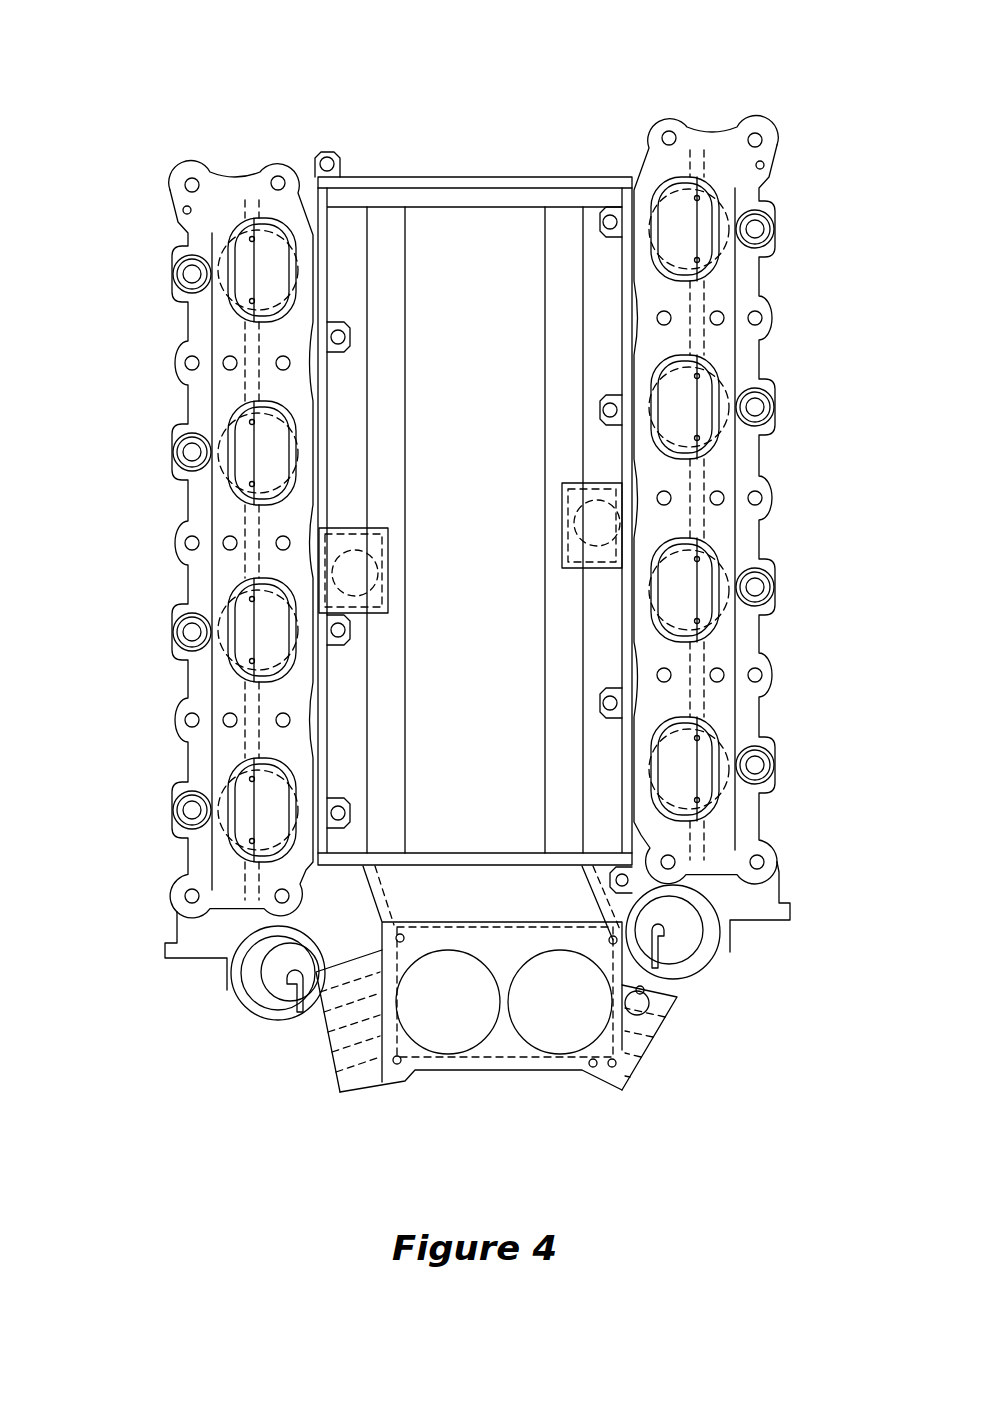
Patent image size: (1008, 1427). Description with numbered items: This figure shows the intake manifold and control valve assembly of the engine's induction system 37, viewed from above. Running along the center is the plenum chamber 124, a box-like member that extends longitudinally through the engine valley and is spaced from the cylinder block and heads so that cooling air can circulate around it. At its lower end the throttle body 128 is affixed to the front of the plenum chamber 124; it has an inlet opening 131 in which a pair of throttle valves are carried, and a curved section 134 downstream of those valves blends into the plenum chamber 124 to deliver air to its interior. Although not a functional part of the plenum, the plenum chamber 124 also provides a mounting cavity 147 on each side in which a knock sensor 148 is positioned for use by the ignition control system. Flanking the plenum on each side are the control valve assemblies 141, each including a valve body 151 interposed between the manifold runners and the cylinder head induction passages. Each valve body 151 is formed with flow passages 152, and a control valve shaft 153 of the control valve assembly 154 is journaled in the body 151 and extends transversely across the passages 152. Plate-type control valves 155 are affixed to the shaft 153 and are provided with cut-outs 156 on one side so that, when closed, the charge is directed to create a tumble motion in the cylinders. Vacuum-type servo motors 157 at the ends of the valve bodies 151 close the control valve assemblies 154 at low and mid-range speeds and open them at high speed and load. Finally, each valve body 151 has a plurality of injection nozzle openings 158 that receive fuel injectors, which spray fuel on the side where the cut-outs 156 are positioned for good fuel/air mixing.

The induction system 37 is at (489, 164).
The plenum chamber 124 is at (437, 172).
The throttle body 128 is at (520, 1079).
The inlet opening 131 is at (450, 1075).
The curved section 134 is at (503, 900).
The control valve assembly 141 is at (164, 294).
The mounting cavity 147 is at (390, 543).
The knock sensor 148 is at (573, 543).
The valve body 151 is at (175, 363).
The flow passage 152 is at (296, 272).
The control valve shaft 153 is at (267, 233).
The control valve assembly 154 is at (313, 98).
The plate-type control valve 155 is at (260, 262).
The cut-out 156 is at (185, 232).
The vacuum-type servo motor 157 is at (260, 995).
The injection nozzle opening 158 is at (195, 275).